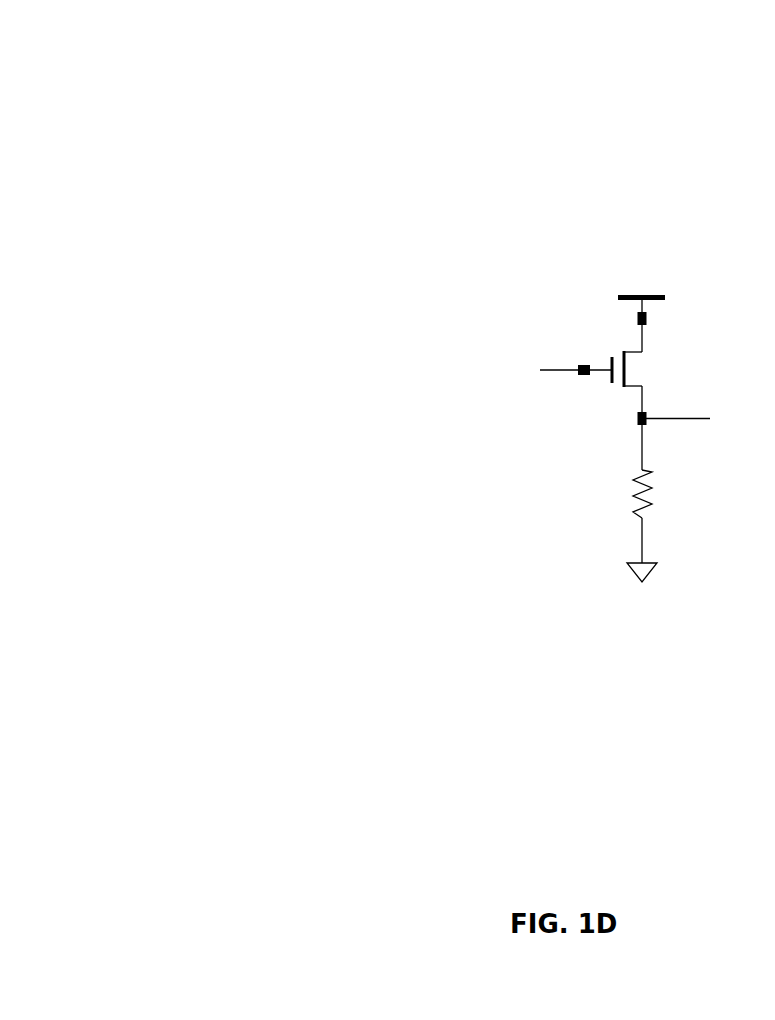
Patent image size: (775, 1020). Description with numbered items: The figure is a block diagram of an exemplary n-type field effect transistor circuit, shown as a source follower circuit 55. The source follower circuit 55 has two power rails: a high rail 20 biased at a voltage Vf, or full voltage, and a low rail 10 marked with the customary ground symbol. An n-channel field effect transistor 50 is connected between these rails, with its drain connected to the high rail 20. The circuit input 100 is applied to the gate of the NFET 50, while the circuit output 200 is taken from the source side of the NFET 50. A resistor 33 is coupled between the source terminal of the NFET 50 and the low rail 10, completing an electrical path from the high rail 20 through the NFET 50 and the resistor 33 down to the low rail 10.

The source follower circuit 55 is at (205, 103).
The high rail 20 is at (627, 295).
The n-channel field effect transistor 50 is at (617, 368).
The circuit input 100 is at (543, 364).
The circuit output 200 is at (695, 419).
The resistor 33 is at (637, 488).
The low rail 10 is at (667, 567).